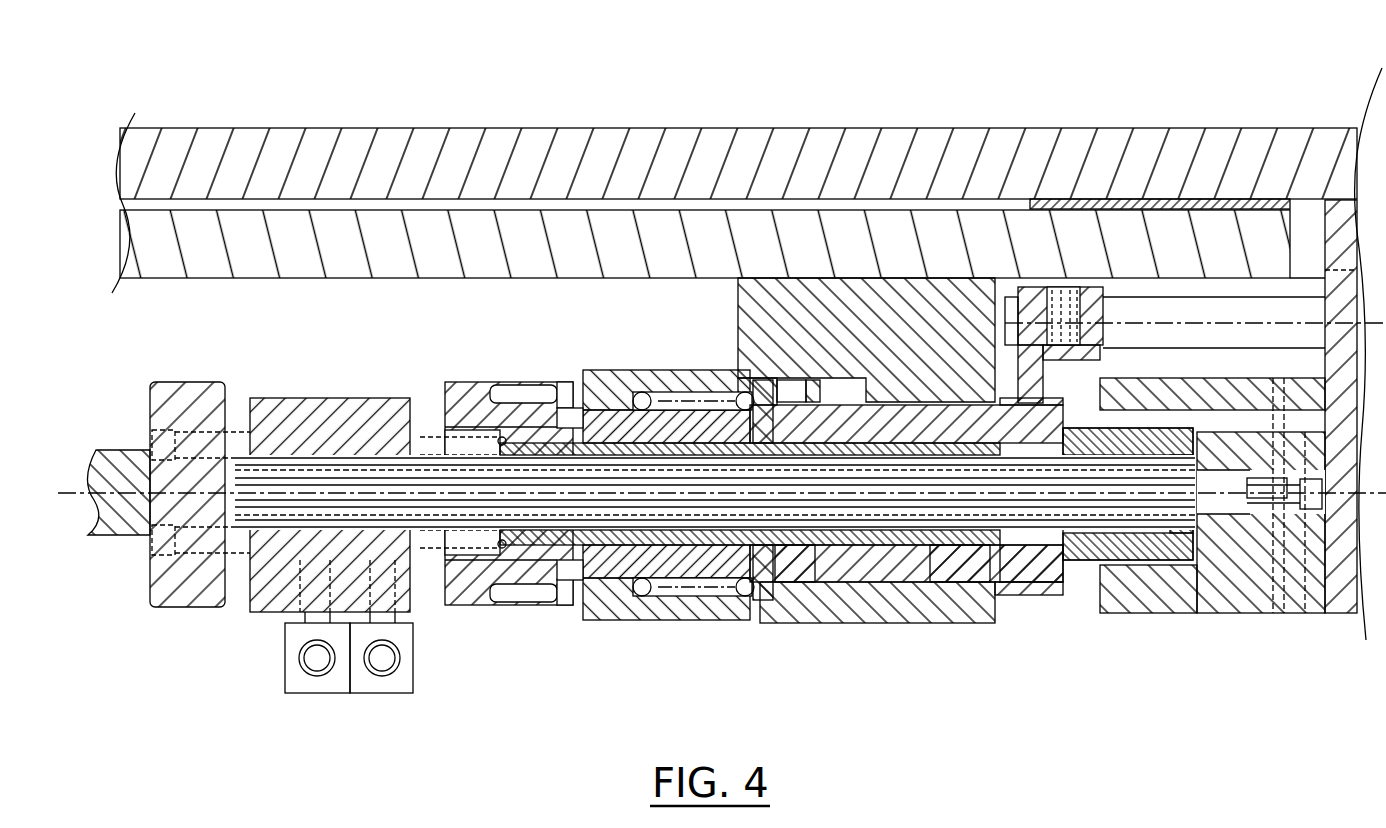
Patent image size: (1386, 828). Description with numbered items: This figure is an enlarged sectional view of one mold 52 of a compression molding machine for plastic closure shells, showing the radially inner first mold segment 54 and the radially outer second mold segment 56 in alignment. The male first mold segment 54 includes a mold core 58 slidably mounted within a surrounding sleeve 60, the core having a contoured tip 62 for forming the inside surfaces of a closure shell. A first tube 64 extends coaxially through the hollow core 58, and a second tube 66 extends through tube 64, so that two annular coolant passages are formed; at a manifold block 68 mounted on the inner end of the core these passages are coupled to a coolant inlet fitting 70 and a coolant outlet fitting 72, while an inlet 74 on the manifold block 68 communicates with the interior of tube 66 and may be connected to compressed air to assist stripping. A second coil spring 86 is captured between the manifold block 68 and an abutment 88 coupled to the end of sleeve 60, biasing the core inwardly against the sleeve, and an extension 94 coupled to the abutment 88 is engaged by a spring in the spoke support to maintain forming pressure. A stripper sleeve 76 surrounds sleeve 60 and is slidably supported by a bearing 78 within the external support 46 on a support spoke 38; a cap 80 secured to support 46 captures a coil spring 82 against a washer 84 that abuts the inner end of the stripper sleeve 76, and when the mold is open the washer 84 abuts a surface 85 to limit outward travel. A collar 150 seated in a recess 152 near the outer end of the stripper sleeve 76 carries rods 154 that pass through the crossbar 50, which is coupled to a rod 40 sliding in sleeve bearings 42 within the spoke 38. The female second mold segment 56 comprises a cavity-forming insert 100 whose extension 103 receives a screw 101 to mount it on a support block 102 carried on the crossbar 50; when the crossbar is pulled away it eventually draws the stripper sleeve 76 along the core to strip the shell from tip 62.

The support spoke 38 is at (880, 228).
The rod 40 is at (815, 148).
The sleeve bearing 42 is at (1045, 205).
The external support 46 is at (930, 585).
The crossbar 50 is at (1330, 368).
The mold 52 is at (1080, 710).
The first mold segment 54 is at (1008, 608).
The second mold segment 56 is at (1158, 628).
The mold core 58 is at (847, 538).
The sleeve 60 is at (882, 528).
The core tip 62 is at (1228, 545).
The first tube 64 is at (722, 512).
The second tube 66 is at (556, 607).
The manifold block 68 is at (258, 400).
The coolant inlet fitting 70 is at (313, 693).
The coolant outlet fitting 72 is at (383, 693).
The inlet 74 is at (285, 612).
The stripper sleeve 76 is at (1023, 600).
The bearing 78 is at (967, 610).
The cap 80 is at (595, 620).
The coil spring 82 is at (640, 612).
The washer 84 is at (767, 613).
The surface 85 is at (795, 600).
The second coil spring 86 is at (480, 565).
The abutment 88 is at (462, 395).
The extension 94 is at (112, 450).
The cavity-forming insert 100 is at (1242, 613).
The fastener 101 is at (1285, 590).
The support block 102 is at (1210, 613).
The extension 103 is at (1340, 600).
The collar 150 is at (1090, 287).
The recess 152 is at (1048, 625).
The rod 154 is at (1215, 310).